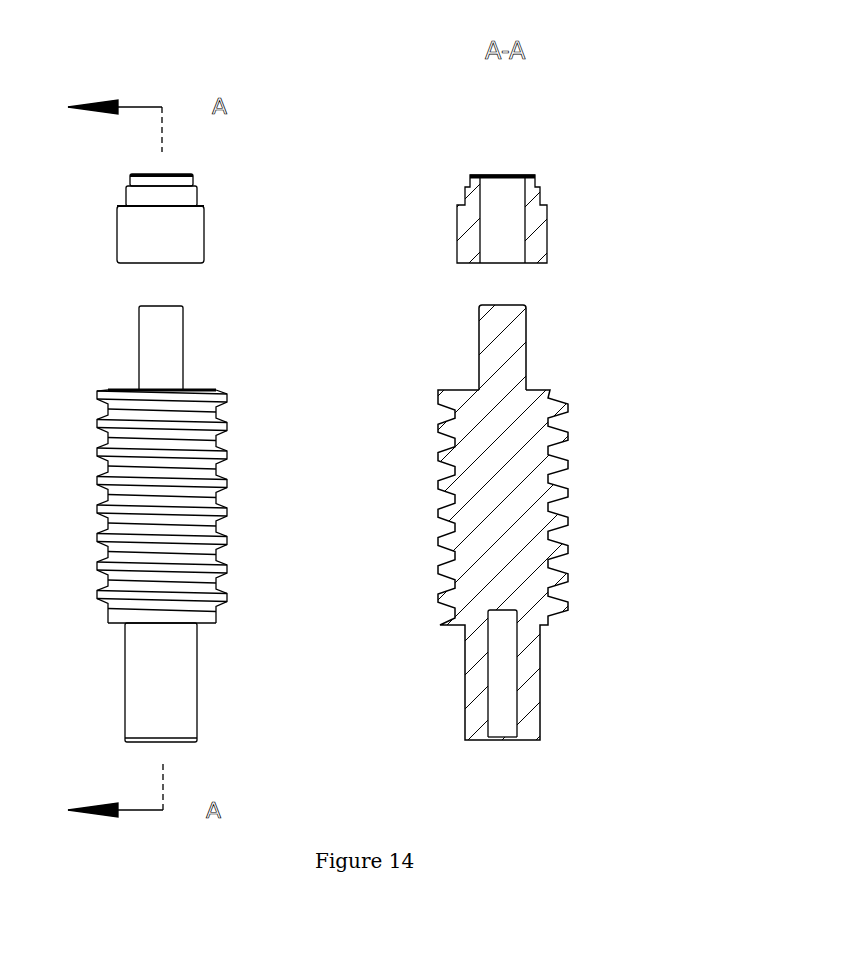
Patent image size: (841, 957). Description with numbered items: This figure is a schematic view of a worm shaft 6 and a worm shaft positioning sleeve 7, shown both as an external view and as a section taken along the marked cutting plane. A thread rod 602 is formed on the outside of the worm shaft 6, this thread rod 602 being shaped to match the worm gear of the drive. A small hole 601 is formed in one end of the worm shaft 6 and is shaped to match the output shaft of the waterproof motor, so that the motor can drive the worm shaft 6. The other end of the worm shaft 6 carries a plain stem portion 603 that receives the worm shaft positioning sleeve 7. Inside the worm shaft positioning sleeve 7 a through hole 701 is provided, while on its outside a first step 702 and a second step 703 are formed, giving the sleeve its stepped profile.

The worm shaft positioning sleeve 7 is at (420, 417).
The through hole 701 is at (507, 213).
The first step 702 is at (465, 197).
The second step 703 is at (470, 178).
The worm shaft 6 is at (420, 460).
The small hole 601 is at (503, 715).
The thread rod 602 is at (440, 452).
The screw stem 603 is at (479, 330).